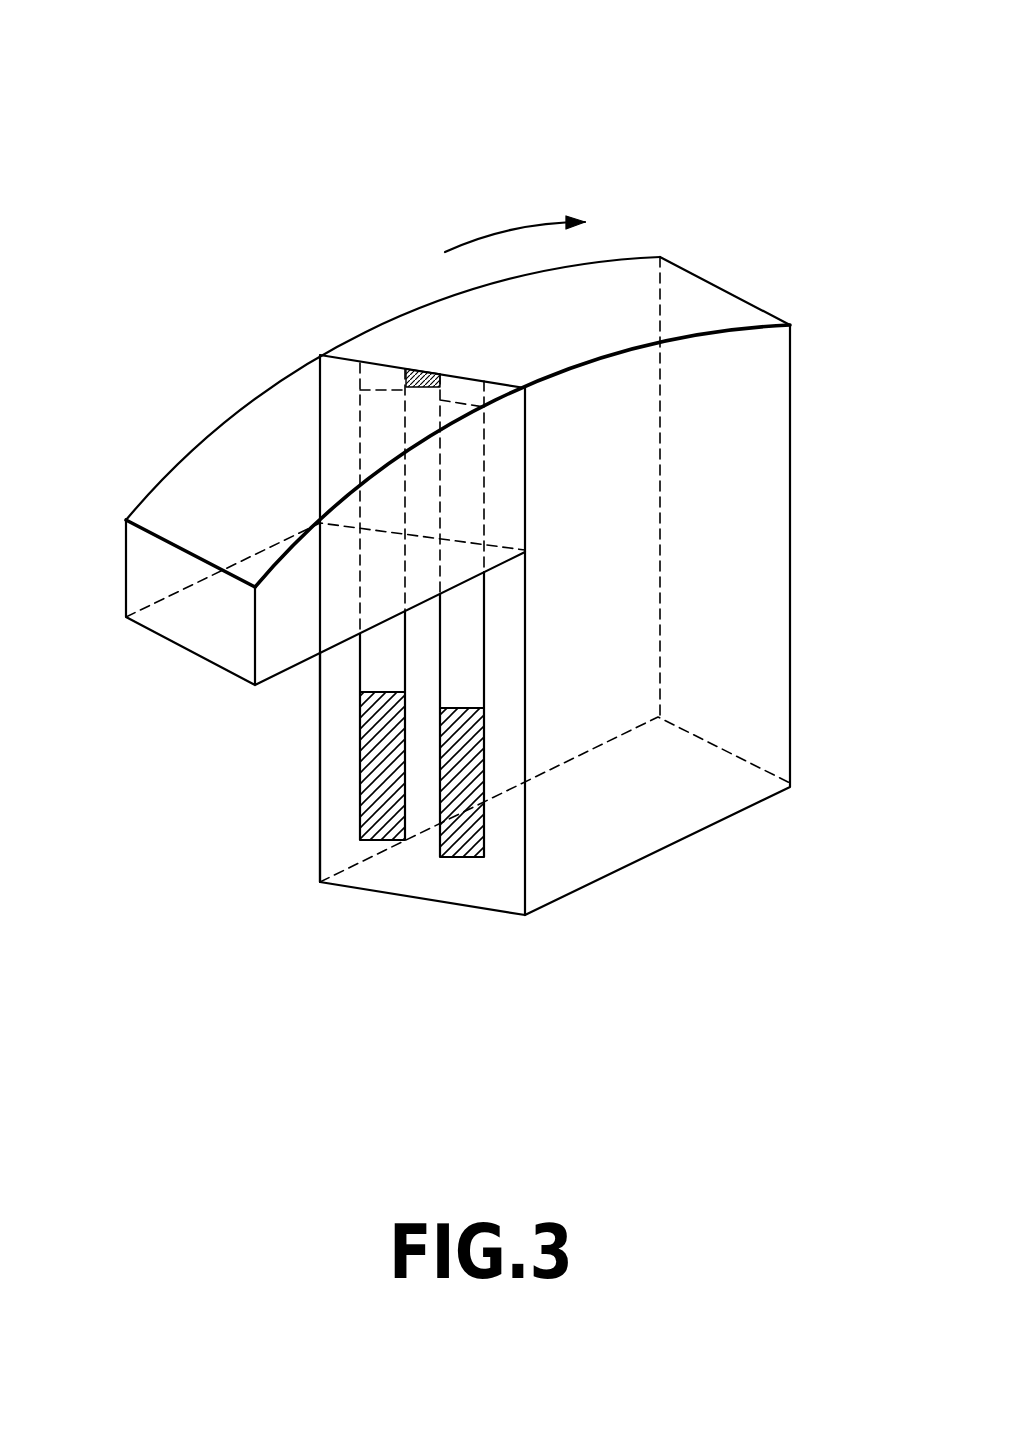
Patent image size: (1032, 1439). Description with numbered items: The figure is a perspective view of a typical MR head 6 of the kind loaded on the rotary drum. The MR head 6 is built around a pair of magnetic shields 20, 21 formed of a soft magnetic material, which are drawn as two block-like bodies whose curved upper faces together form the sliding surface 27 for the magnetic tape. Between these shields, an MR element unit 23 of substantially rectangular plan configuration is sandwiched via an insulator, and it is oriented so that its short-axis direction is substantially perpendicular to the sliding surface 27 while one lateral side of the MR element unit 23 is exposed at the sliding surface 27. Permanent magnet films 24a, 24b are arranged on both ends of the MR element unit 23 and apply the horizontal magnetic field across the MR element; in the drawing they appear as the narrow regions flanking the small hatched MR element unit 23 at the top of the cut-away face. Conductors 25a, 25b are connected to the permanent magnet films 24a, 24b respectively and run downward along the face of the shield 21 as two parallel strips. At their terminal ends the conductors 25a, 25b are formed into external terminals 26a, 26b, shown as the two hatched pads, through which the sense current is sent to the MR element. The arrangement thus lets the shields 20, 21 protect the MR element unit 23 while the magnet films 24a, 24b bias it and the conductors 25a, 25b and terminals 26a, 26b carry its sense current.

The MR head 6 is at (803, 203).
The magnetic shield 20 is at (173, 627).
The magnetic shield 21 is at (632, 813).
The MR element unit 23 is at (418, 370).
The permanent magnet film 24a is at (379, 382).
The permanent magnet film 24b is at (453, 383).
The conductor 25a is at (370, 660).
The conductor 25b is at (457, 670).
The external terminal 26a is at (374, 823).
The external terminal 26b is at (462, 822).
The sliding surface 27 is at (187, 500).